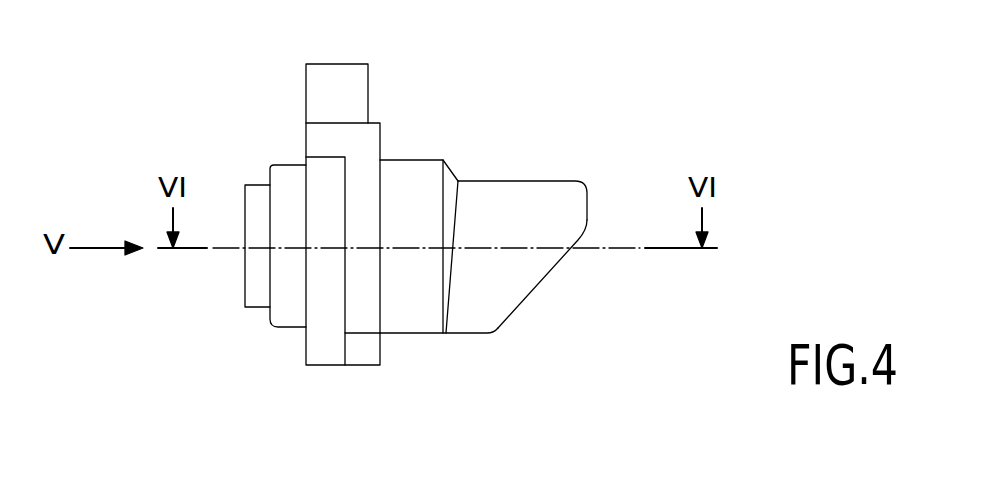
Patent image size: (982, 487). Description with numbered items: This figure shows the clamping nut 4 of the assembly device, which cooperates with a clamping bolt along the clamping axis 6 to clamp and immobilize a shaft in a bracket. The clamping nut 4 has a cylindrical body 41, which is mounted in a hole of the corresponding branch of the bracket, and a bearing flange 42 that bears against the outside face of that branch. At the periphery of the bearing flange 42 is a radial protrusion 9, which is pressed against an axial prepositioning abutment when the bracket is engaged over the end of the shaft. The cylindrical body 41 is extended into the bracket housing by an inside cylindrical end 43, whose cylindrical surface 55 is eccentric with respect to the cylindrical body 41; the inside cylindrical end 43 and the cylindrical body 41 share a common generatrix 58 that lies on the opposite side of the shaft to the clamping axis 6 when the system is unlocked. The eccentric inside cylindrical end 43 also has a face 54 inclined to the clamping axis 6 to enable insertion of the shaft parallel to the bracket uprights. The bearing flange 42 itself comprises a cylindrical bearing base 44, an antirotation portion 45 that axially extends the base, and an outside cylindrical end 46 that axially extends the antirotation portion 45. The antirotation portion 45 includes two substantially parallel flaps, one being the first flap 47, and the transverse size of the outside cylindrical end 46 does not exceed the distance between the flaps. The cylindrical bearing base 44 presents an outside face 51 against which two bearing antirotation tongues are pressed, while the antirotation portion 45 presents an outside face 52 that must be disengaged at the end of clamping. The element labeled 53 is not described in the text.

The clamping nut 4 is at (455, 157).
The clamping axis 6 is at (610, 247).
The radial protrusion 9 is at (330, 85).
The cylindrical body 41 is at (408, 307).
The bearing flange 42 is at (362, 153).
The inside cylindrical end 43 is at (497, 283).
The cylindrical bearing base 44 is at (357, 368).
The antirotation portion 45 is at (325, 368).
The outside cylindrical end 46 is at (287, 283).
The first flap 47 is at (323, 307).
The outside face 51 is at (337, 322).
The outside face 52 is at (307, 198).
The journal 53 is at (245, 267).
The inclined face 54 is at (553, 270).
The cylindrical surface 55 is at (522, 181).
The common generatrix 58 is at (467, 334).